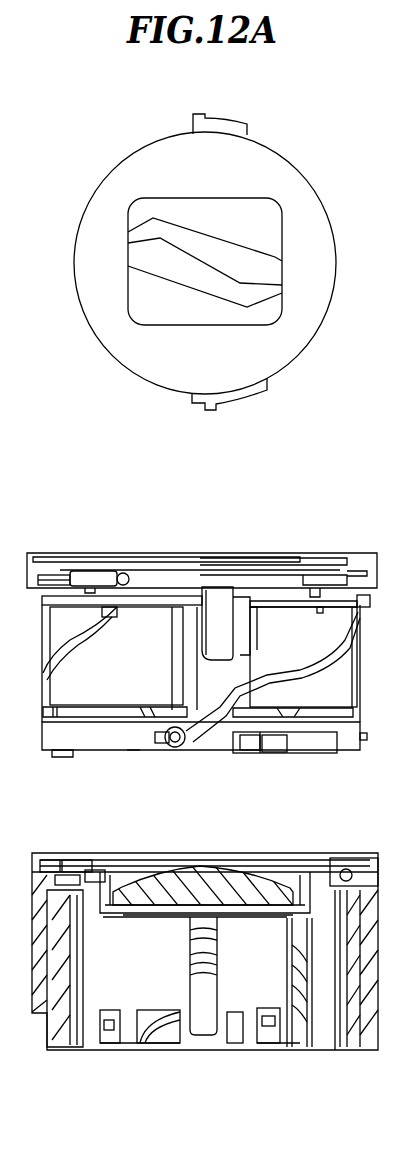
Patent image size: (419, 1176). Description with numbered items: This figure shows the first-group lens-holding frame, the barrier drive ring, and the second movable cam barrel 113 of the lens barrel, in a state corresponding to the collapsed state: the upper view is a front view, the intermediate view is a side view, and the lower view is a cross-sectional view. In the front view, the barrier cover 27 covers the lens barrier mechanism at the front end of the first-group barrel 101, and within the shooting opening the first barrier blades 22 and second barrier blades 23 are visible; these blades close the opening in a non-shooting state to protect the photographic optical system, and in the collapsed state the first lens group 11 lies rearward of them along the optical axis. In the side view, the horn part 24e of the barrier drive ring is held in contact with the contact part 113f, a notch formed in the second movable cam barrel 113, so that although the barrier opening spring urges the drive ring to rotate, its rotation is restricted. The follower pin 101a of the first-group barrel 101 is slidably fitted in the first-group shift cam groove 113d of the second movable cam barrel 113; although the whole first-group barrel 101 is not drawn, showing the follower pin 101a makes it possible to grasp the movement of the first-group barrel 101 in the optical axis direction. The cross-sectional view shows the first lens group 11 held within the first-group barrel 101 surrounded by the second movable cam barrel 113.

The first barrier blades 22 is at (255, 218).
The second barrier blades 23 is at (262, 272).
The barrier cover 27 is at (303, 333).
The contact part 113f is at (198, 605).
The horn part 24e is at (216, 597).
The second movable cam barrel 113 is at (265, 623).
The follower pin 101a is at (180, 748).
The first-group shift cam groove 113d is at (310, 660).
The first lens group 11 is at (197, 877).
The first-group barrel 101 is at (373, 1033).